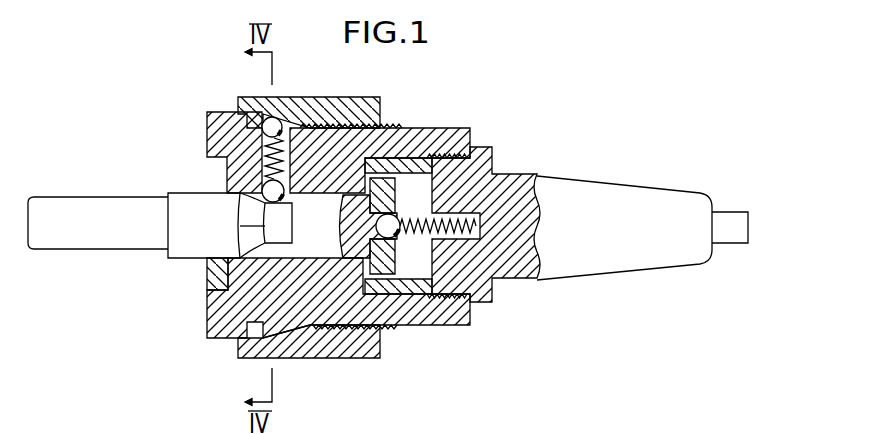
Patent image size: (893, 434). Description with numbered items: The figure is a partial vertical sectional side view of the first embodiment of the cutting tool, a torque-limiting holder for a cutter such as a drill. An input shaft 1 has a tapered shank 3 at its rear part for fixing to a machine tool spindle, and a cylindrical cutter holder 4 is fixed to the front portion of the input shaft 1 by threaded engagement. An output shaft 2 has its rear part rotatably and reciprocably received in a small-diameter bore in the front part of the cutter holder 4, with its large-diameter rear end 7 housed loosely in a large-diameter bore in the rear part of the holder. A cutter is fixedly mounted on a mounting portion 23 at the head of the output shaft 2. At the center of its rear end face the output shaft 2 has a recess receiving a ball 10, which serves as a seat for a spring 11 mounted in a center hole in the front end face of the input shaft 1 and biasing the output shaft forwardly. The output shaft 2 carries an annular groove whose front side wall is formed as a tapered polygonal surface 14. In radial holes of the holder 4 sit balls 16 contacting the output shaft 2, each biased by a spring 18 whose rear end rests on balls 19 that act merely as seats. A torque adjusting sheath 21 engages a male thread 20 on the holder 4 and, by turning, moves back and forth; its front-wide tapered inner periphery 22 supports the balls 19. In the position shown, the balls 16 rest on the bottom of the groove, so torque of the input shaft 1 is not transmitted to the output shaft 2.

The input shaft 1 is at (495, 186).
The output shaft 2 is at (180, 247).
The tapered shank 3 is at (688, 193).
The cylindrical cutter holder 4 is at (458, 129).
The large-diameter rear end 7 is at (413, 230).
The ball 10 is at (399, 236).
The spring 11 is at (493, 281).
The tapered polygonal surface 14 is at (250, 232).
The ball 16 is at (263, 196).
The spring 18 is at (262, 142).
The balls 19 is at (275, 116).
The male thread 20 is at (390, 124).
The torque adjusting sheath 21 is at (252, 94).
The inner periphery 22 is at (238, 358).
The mounting portion 23 is at (75, 196).